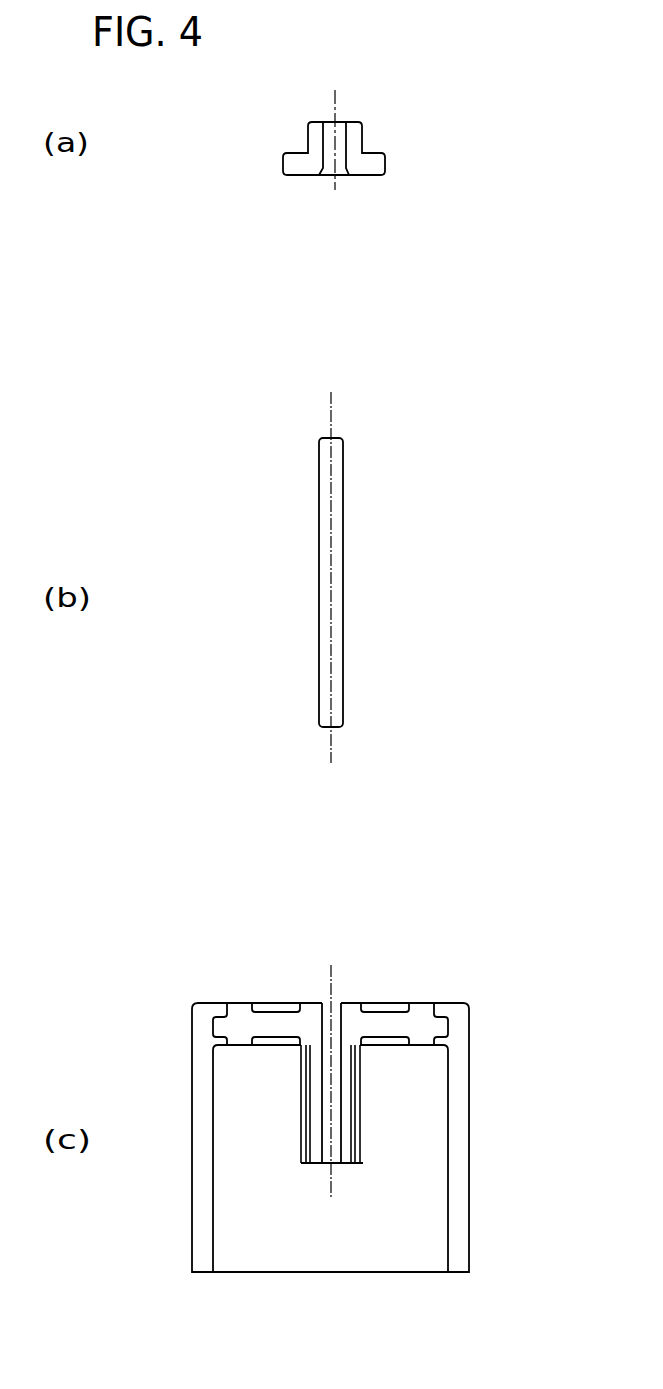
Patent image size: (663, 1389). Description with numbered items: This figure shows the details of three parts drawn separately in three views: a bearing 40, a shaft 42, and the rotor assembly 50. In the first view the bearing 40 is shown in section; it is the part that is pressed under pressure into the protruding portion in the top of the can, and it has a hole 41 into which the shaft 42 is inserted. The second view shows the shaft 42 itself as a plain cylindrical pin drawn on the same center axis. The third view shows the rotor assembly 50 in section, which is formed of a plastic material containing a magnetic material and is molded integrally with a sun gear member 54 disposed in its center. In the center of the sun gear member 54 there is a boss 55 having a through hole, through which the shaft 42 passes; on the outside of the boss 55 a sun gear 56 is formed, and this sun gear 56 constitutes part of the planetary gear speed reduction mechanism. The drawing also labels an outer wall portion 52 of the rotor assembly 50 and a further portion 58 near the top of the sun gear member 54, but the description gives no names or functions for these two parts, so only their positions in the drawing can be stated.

The bearing 40 is at (381, 170).
The hole 41 is at (332, 173).
The shaft 42 is at (343, 557).
The rotor assembly 50 is at (371, 1114).
The outer wall of holder 52 is at (462, 1145).
The sun gear member 54 is at (243, 1027).
The boss 55 is at (347, 1163).
The sun gear 56 is at (305, 1142).
The tab 58 is at (336, 1012).